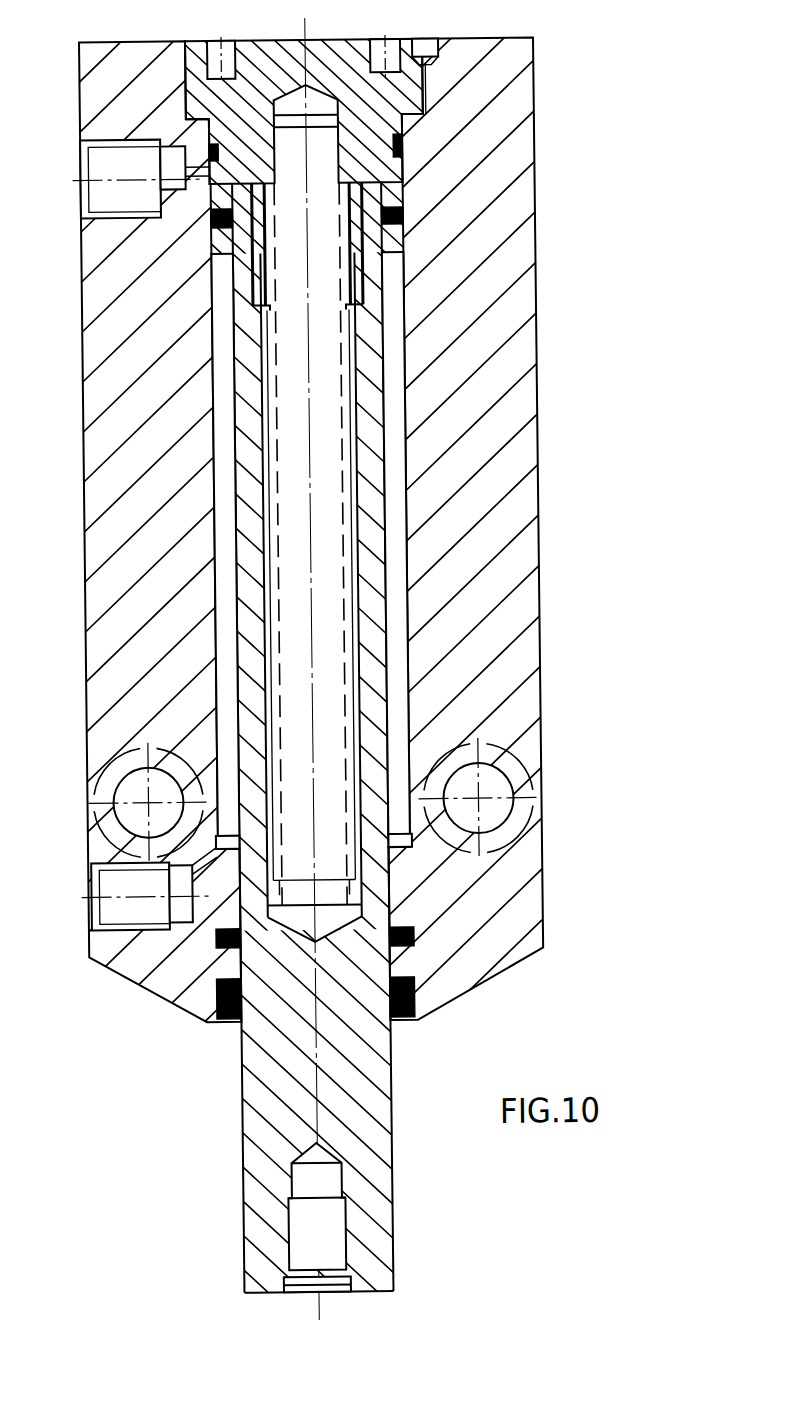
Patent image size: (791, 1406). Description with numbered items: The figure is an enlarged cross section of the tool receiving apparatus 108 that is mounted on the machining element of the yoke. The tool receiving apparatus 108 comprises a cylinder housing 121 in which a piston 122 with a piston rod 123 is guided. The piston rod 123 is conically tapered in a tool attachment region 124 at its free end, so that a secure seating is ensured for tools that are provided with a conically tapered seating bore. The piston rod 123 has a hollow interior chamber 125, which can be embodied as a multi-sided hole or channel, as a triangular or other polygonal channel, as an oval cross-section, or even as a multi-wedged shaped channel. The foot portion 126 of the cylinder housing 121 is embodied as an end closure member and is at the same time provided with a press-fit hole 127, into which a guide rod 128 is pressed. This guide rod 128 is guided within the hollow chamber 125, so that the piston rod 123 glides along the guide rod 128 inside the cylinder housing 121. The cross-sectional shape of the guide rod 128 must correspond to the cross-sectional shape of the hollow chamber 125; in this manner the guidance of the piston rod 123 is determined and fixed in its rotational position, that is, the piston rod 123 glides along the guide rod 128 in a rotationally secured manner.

The tool receiving apparatus 108 is at (612, 334).
The cylinder housing 121 is at (515, 662).
The piston 122 is at (392, 197).
The piston rod 123 is at (367, 483).
The tool attachment region 124 is at (229, 1210).
The hollow interior chamber 125 is at (366, 537).
The foot portion 126 is at (350, 63).
The press-fit hole 127 is at (288, 101).
The guide rod 128 is at (326, 403).